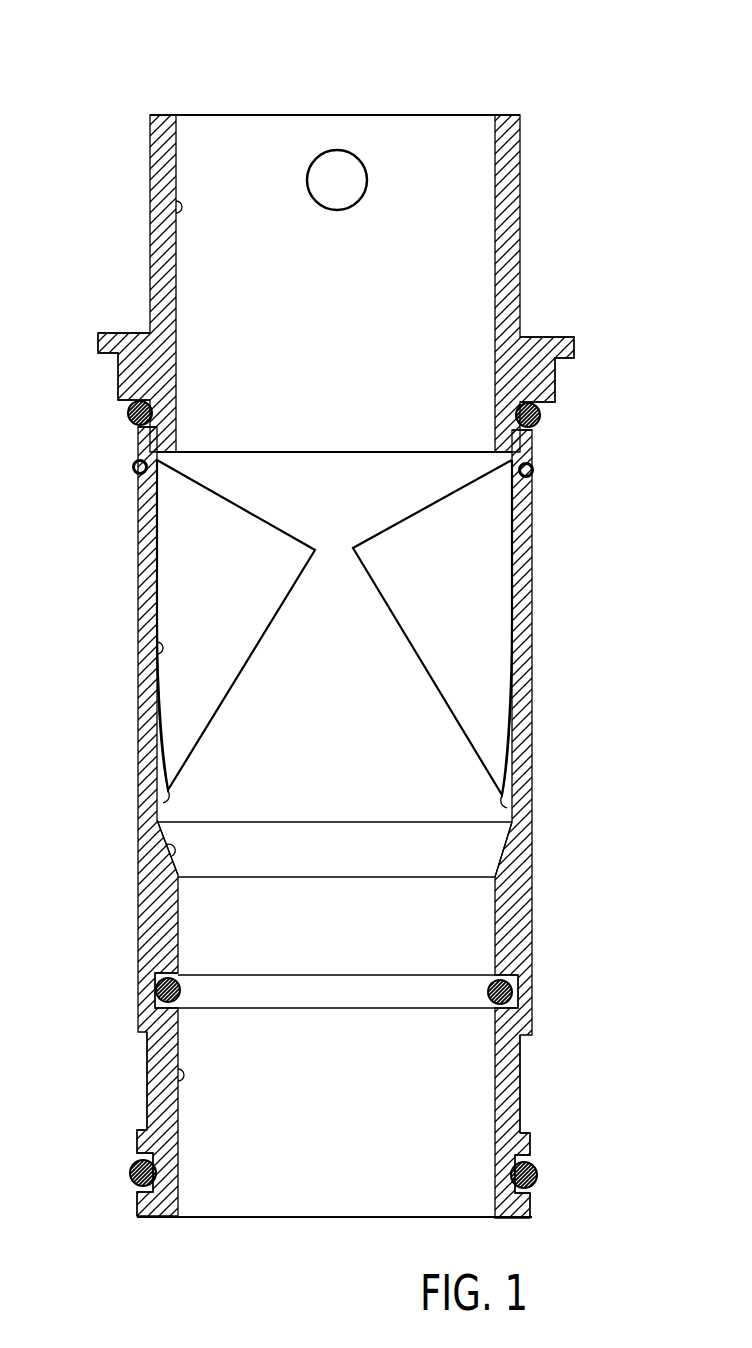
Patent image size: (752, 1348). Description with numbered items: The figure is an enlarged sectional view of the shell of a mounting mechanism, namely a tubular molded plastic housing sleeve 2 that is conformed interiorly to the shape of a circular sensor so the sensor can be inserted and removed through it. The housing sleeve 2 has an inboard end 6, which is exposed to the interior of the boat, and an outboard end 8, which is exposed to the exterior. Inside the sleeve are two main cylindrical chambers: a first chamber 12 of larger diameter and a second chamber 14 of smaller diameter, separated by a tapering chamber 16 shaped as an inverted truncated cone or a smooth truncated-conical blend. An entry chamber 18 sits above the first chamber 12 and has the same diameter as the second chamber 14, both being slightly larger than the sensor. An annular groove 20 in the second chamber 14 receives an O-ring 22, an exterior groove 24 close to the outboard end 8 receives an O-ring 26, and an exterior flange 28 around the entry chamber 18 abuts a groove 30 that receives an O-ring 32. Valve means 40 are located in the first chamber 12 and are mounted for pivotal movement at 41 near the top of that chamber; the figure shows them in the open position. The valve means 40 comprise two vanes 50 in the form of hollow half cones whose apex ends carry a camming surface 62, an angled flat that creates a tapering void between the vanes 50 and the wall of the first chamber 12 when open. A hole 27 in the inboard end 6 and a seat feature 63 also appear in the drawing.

The housing sleeve 2 is at (332, 828).
The inboard end 6 is at (319, 228).
The outboard end 8 is at (268, 1236).
The first chamber 12 is at (138, 662).
The second chamber 14 is at (147, 1095).
The tapering chamber 16 is at (140, 858).
The entry chamber 18 is at (176, 207).
The annular groove 20 is at (205, 970).
The O-ring 22 is at (183, 990).
The exterior groove 24 is at (137, 1143).
The O-ring 26 is at (130, 1178).
The hole 27 is at (366, 186).
The exterior flange 28 is at (113, 332).
The groove 30 is at (127, 403).
The O-ring 32 is at (137, 428).
The valve means 40 is at (340, 480).
The pivotal mounting 41 is at (137, 475).
The vane 50 is at (244, 591).
The camming surface 62 is at (140, 772).
The valve seat 63 is at (140, 817).